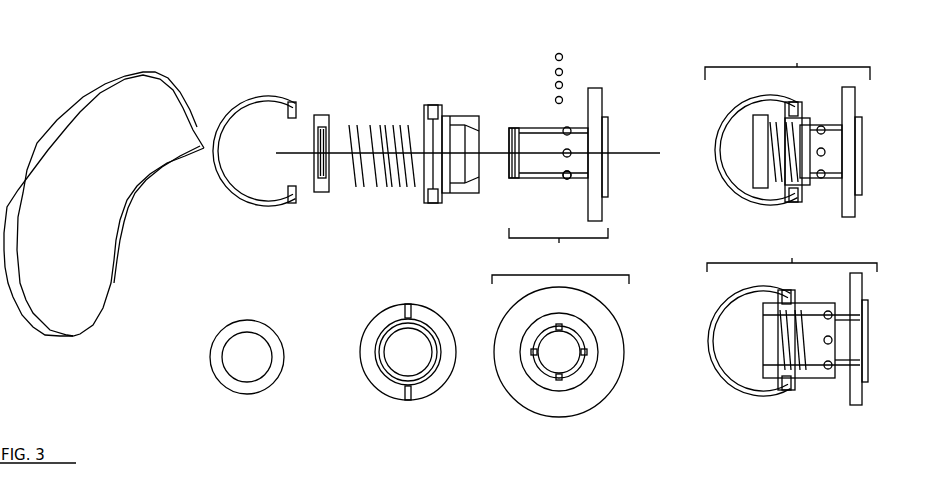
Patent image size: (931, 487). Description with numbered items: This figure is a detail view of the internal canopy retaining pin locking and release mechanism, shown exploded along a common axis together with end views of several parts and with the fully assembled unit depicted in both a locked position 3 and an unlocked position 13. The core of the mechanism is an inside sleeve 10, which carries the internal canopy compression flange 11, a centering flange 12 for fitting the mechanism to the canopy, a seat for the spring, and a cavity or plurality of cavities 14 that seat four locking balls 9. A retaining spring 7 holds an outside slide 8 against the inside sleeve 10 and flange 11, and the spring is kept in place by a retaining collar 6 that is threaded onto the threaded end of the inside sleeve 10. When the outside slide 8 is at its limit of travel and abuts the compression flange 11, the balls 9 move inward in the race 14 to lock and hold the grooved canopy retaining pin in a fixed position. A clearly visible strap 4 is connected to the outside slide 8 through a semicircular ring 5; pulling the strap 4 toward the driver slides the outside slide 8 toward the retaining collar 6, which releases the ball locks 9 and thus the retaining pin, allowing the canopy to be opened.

The locked position 3 is at (787, 124).
The strap 4 is at (122, 68).
The semicircular ring 5 is at (259, 84).
The retaining collar 6 is at (324, 109).
The retaining spring 7 is at (377, 108).
The outside slide 8 is at (450, 100).
The locking balls 9 is at (559, 46).
The inside sleeve 10 is at (559, 274).
The internal canopy compression flange 11 is at (596, 108).
The centering flange 12 is at (604, 181).
The unlocked position 13 is at (792, 318).
The cavities 14 is at (566, 180).